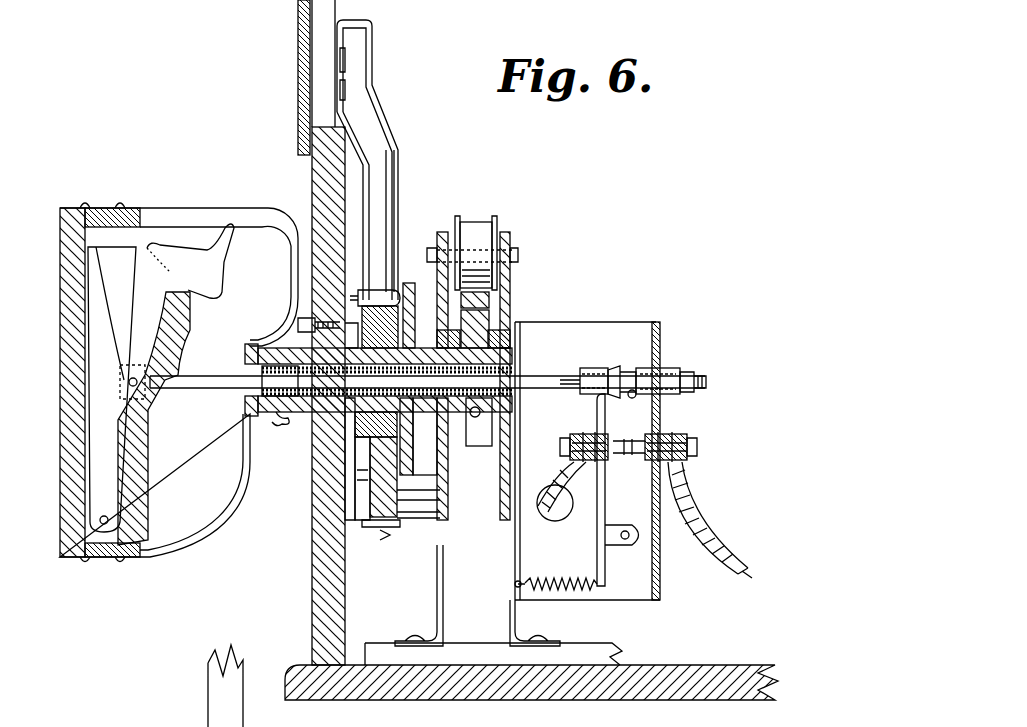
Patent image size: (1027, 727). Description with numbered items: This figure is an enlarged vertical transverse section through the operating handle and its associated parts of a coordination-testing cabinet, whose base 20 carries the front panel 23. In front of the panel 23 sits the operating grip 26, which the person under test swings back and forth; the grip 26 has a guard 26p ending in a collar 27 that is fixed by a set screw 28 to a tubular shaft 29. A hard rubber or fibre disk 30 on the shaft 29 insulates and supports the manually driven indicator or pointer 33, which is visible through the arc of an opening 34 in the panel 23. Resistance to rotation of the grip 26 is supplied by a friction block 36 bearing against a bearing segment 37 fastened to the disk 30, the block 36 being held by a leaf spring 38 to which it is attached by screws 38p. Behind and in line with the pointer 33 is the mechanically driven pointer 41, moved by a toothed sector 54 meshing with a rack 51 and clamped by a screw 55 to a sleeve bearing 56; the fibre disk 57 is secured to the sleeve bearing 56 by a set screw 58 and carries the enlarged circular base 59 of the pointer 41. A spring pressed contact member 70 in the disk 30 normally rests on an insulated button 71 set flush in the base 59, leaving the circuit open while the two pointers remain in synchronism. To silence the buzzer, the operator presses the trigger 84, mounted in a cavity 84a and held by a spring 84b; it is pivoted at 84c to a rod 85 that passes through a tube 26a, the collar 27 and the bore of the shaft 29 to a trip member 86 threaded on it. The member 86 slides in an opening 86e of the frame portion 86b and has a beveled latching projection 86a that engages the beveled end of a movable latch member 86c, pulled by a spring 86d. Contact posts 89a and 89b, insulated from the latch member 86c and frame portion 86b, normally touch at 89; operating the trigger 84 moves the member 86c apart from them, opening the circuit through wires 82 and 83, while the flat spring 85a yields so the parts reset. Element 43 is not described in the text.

The base 20 is at (468, 690).
The front panel 23 is at (312, 608).
The operating grip 26 is at (60, 300).
The guard 26p is at (250, 326).
The tube 26a is at (210, 398).
The collar 27 is at (266, 356).
The set screw 28 is at (283, 420).
The tubular shaft 29 is at (284, 396).
The hard rubber or fibre disk 30 is at (360, 430).
The indicator or pointer 33 is at (358, 100).
The opening 34 is at (326, 66).
The friction block 36 is at (368, 468).
The bearing segment 37 is at (390, 520).
The leaf spring 38 is at (368, 528).
The screws 38p is at (378, 558).
The mechanically driven pointer 41 is at (375, 55).
The bearing plates 43 is at (445, 232).
The rack 51 is at (490, 300).
The toothed sector 54 is at (490, 322).
The screw 55 is at (476, 418).
The sleeve bearing 56 is at (466, 446).
The fibre or hard rubber disk 57 is at (402, 292).
The set screw 58 is at (482, 228).
The enlarged circular base 59 is at (433, 490).
The spring pressed contact member 70 is at (398, 150).
The insulated button 71 is at (412, 283).
The wire 82 is at (568, 512).
The wire 83 is at (706, 552).
The trigger 84 is at (212, 262).
The cavity 84a is at (114, 389).
The spring 84b is at (112, 312).
The pivotal connection 84c is at (129, 382).
The rod 85 is at (545, 378).
The flat spring 85a is at (592, 366).
The trip member 86 is at (652, 384).
The latching projection 86a is at (628, 396).
The frame portion 86b is at (660, 584).
The movable latch member 86c is at (597, 404).
The spring 86d is at (548, 590).
The opening 86e is at (652, 364).
The contact 89 is at (628, 456).
The electrical contact post 89a is at (562, 447).
The electrical contact post 89b is at (698, 447).